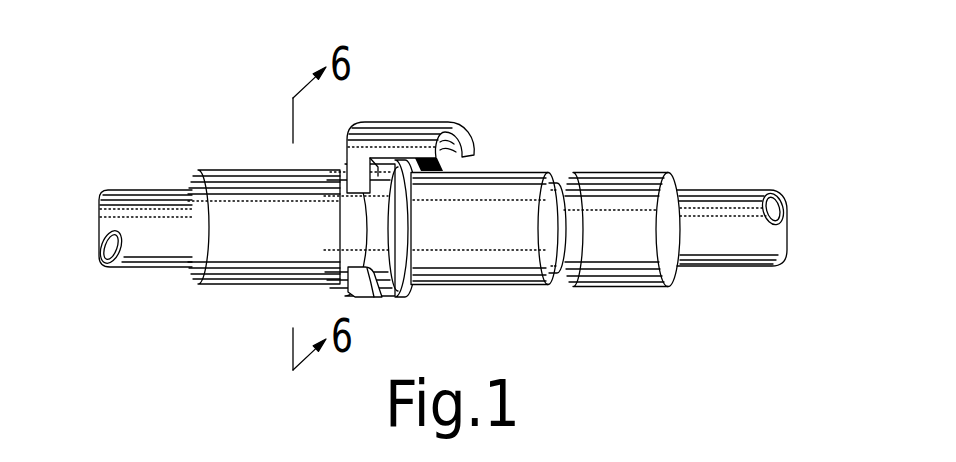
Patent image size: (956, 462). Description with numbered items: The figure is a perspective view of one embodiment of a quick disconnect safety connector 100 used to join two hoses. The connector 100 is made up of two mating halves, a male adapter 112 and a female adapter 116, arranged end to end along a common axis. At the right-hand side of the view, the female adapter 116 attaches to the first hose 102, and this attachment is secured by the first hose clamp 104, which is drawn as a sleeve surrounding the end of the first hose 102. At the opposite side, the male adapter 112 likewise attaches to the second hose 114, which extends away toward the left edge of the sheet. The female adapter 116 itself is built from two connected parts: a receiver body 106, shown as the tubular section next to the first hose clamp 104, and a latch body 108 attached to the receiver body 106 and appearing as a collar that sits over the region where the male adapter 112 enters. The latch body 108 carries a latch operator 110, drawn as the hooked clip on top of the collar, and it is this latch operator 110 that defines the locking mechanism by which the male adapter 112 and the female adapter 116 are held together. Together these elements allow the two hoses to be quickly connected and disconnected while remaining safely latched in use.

The connector 100 is at (771, 75).
The first hose 102 is at (749, 189).
The first hose clamp 104 is at (615, 172).
The receiver body 106 is at (514, 172).
The latch body 108 is at (352, 298).
The latch operator 110 is at (408, 120).
The male adapter 112 is at (256, 138).
The second hose 114 is at (152, 188).
The female adapter 116 is at (544, 318).